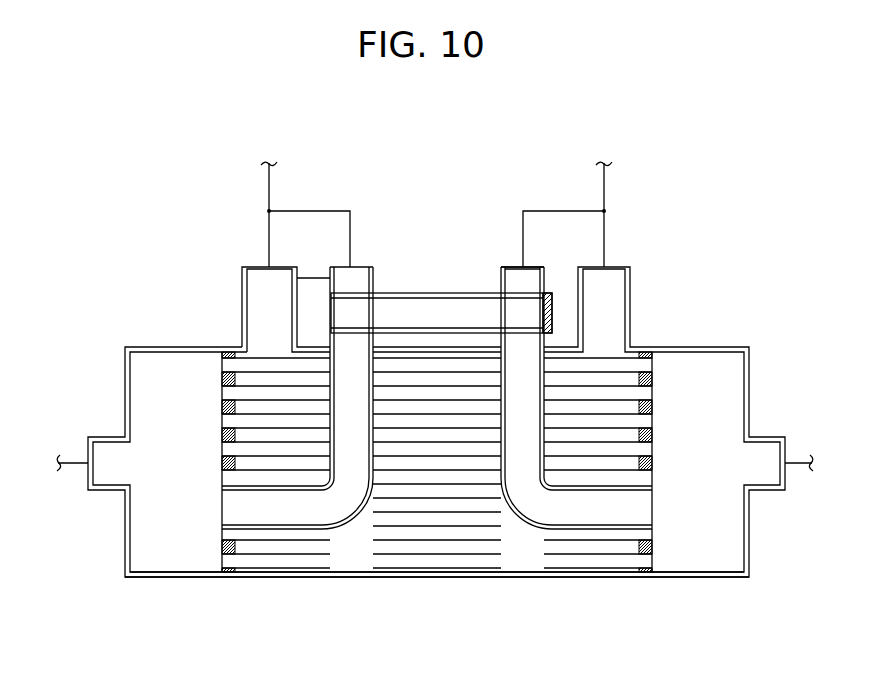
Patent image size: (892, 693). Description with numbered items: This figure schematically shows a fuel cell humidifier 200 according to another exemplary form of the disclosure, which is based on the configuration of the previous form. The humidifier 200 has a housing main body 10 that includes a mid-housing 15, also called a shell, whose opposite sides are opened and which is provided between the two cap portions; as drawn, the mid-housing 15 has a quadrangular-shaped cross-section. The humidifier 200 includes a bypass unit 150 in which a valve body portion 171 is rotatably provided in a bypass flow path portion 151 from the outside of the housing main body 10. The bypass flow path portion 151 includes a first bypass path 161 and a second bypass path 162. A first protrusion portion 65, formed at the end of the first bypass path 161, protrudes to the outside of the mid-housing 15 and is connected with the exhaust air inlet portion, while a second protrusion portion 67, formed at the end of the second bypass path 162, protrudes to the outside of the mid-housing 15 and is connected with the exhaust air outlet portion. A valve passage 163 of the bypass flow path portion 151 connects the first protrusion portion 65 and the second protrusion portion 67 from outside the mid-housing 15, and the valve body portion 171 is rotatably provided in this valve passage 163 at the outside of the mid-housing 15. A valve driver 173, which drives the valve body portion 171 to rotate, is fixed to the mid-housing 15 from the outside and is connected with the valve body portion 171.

The humidifier 200 is at (448, 137).
The housing main body 10 is at (717, 335).
The mid-housing 15 is at (593, 578).
The bypass unit 150 is at (430, 286).
The bypass flow path portion 151 is at (403, 647).
The first bypass path 161 is at (370, 478).
The second bypass path 162 is at (504, 478).
The valve passage 163 is at (440, 300).
The first protrusion portion 65 is at (377, 275).
The second protrusion portion 67 is at (498, 275).
The valve body portion 171 is at (528, 288).
The valve driver 173 is at (312, 287).